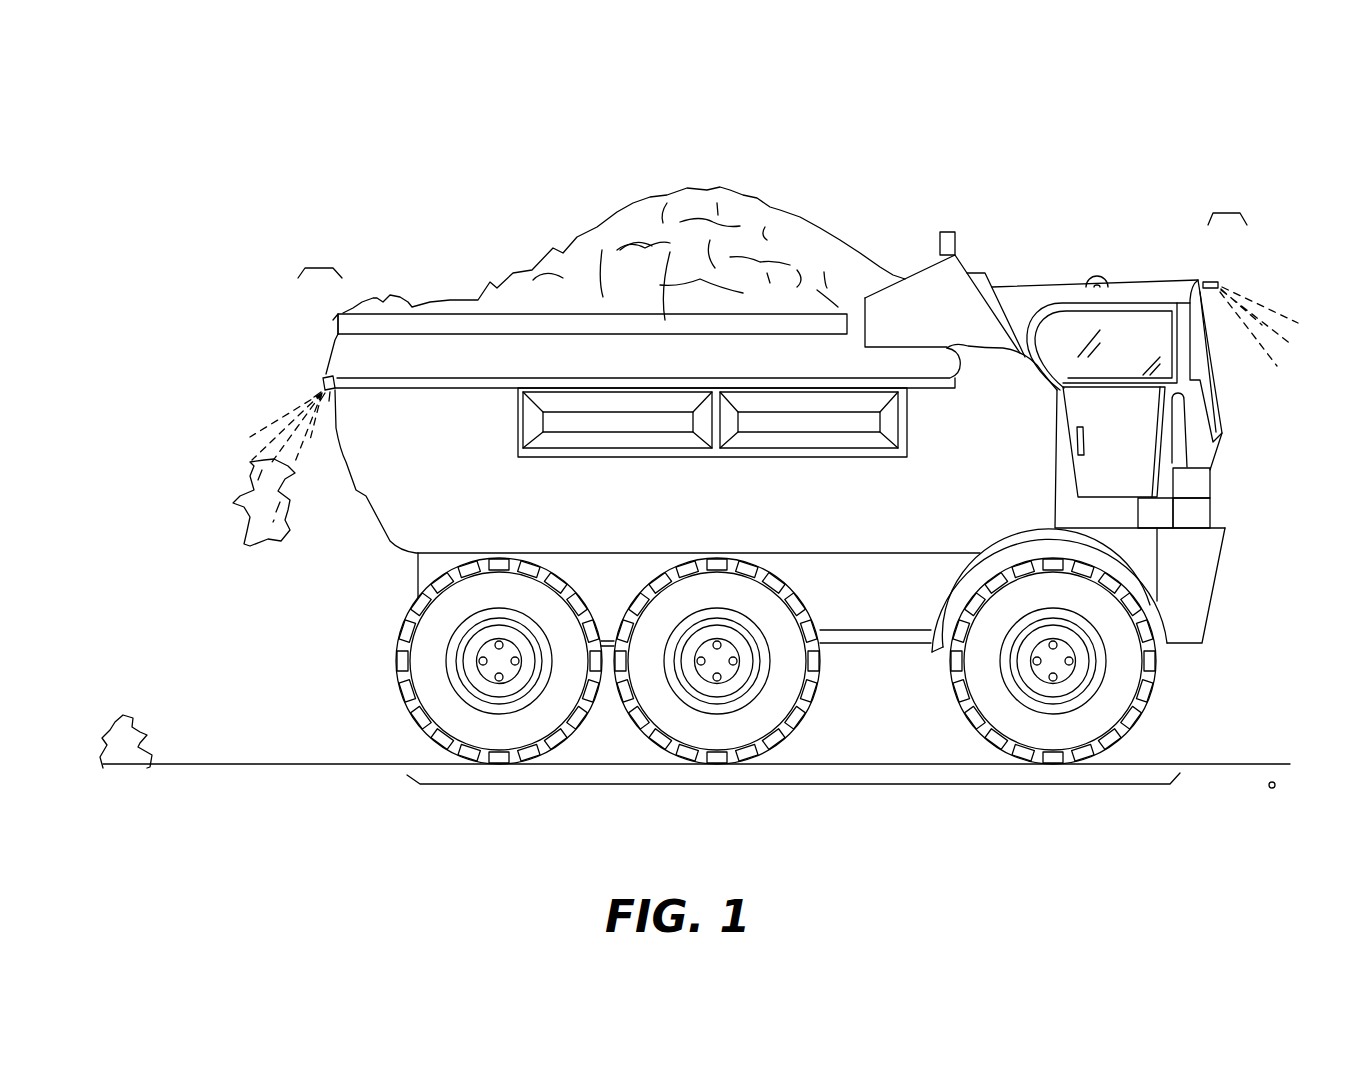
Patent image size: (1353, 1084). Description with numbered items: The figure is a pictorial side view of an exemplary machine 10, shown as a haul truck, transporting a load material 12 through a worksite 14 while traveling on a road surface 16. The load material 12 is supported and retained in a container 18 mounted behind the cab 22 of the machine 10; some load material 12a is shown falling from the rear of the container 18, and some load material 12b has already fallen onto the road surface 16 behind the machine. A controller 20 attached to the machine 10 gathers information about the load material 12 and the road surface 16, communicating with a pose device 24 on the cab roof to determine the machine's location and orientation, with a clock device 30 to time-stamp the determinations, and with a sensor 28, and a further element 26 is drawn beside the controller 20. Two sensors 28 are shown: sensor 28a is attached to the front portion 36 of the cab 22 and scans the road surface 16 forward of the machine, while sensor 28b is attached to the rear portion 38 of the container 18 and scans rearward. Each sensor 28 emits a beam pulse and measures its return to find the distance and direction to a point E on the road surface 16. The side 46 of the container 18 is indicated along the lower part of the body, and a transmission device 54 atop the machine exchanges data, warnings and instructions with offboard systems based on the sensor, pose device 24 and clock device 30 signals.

The machine 10 is at (810, 466).
The load material 12 is at (734, 192).
The load material falling from container 12a is at (290, 535).
The load material fallen onto road surface 12b is at (138, 732).
The worksite 14 is at (326, 158).
The road surface 16 is at (335, 766).
The container 18 is at (330, 347).
The controller 20 is at (1204, 495).
The cab 22 is at (1143, 287).
The pose device 24 is at (1095, 271).
The memory 26 is at (1168, 525).
The sensor 28 is at (774, 315).
The sensor 28a is at (1250, 298).
The sensor 28b is at (335, 380).
The clock device 30 is at (1204, 525).
The front portion 36 is at (1227, 213).
The rear portion 38 is at (318, 268).
The side 46 is at (798, 786).
The transmission device 54 is at (948, 232).
The point E is at (1268, 788).